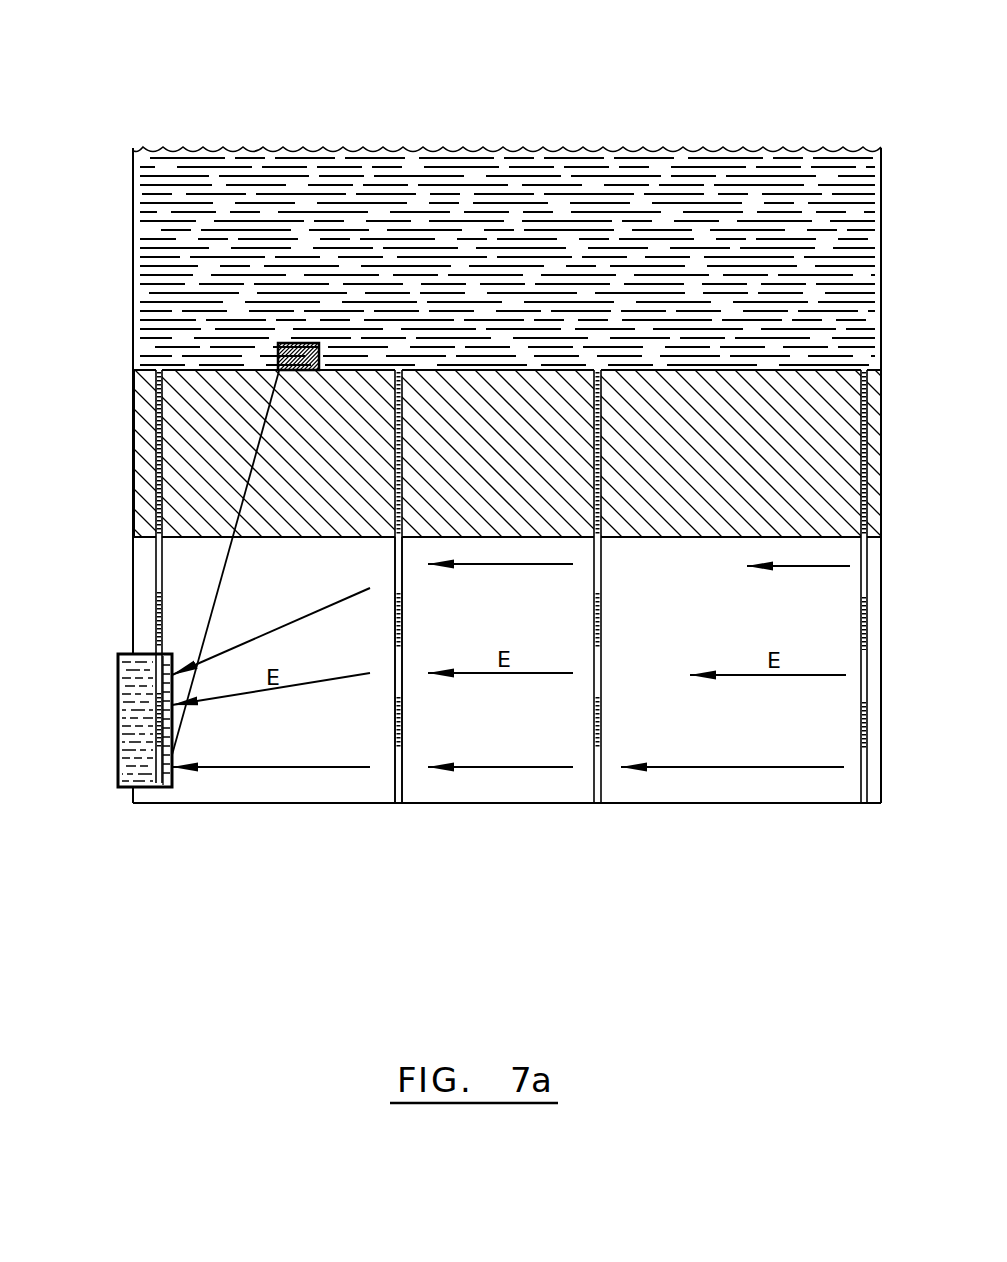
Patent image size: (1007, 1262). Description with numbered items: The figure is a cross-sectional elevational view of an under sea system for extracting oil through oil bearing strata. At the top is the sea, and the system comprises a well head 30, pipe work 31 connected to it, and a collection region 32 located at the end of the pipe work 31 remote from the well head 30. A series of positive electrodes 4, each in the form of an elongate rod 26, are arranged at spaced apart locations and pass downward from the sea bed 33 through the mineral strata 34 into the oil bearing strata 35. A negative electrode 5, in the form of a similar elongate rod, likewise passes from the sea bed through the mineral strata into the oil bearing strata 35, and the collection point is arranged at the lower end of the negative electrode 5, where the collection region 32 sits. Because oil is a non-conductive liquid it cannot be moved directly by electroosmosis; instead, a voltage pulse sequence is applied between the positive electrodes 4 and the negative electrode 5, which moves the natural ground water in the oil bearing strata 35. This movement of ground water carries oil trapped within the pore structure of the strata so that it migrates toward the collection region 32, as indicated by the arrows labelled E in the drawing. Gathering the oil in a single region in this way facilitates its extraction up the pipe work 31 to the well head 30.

The well head 30 is at (297, 343).
The sea bed 33 is at (527, 370).
The mineral strata 34 is at (514, 467).
The negative electrode 5 is at (157, 577).
The pipe work 31 is at (210, 608).
The positive electrodes 4 is at (593, 623).
The collection region 32 is at (137, 755).
The elongate rods 26 is at (397, 803).
The oil bearing strata 35 is at (731, 787).